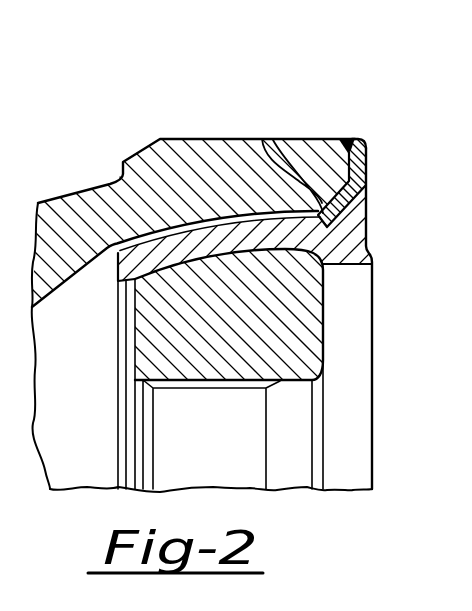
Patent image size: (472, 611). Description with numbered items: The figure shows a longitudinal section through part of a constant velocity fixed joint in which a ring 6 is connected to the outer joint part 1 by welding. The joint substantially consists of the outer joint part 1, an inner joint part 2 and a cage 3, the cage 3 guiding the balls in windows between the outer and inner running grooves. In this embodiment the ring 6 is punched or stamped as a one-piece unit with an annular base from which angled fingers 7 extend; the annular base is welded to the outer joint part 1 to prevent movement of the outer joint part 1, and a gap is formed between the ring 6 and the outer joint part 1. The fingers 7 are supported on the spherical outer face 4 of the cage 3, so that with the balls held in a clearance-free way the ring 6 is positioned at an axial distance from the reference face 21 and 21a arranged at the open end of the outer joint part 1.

The outer joint part 1 is at (83, 213).
The inner joint part 2 is at (200, 267).
The cage 3 is at (150, 248).
The spherical outer face 4 is at (368, 220).
The ring 6 is at (367, 152).
The angled fingers 7 is at (367, 202).
The reference face 21 is at (350, 160).
The reference face 21a is at (261, 139).